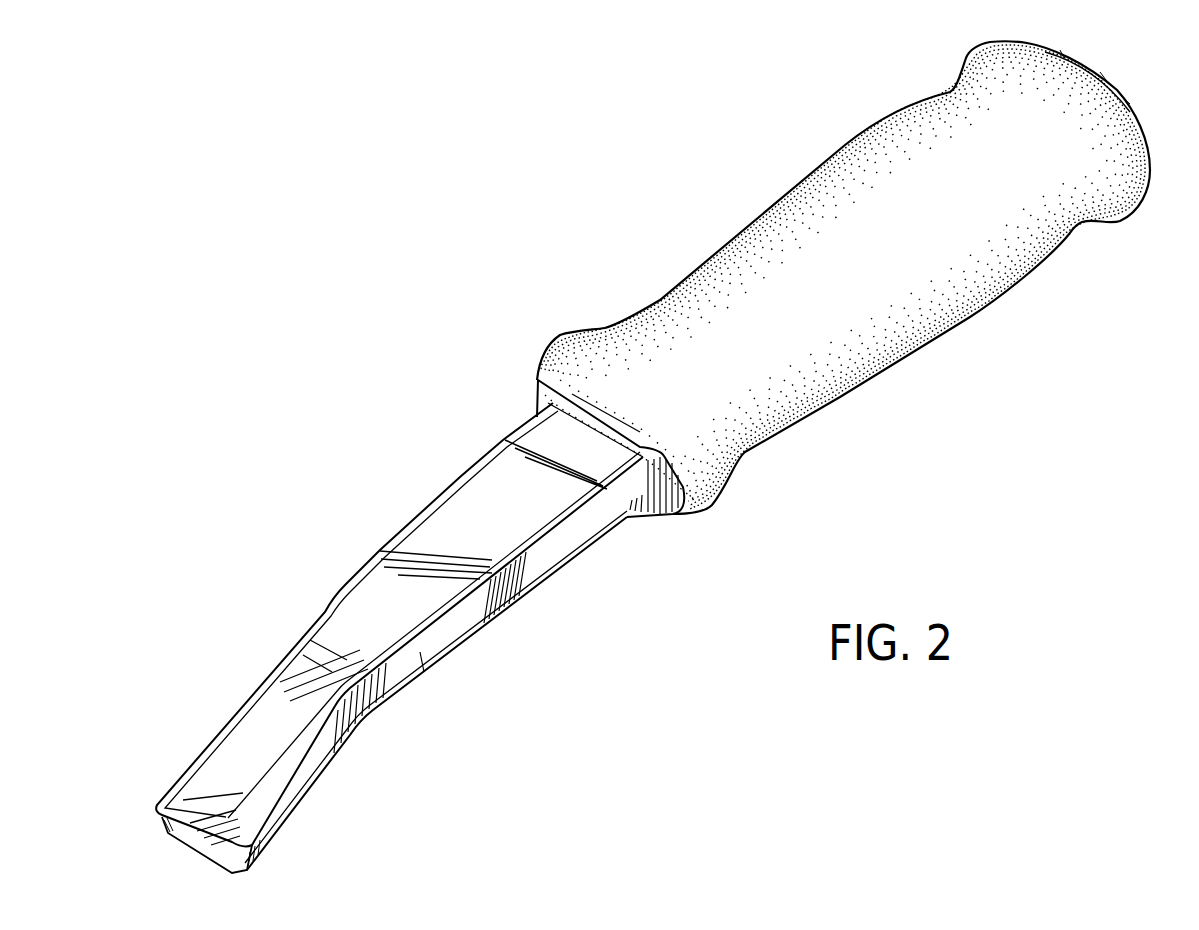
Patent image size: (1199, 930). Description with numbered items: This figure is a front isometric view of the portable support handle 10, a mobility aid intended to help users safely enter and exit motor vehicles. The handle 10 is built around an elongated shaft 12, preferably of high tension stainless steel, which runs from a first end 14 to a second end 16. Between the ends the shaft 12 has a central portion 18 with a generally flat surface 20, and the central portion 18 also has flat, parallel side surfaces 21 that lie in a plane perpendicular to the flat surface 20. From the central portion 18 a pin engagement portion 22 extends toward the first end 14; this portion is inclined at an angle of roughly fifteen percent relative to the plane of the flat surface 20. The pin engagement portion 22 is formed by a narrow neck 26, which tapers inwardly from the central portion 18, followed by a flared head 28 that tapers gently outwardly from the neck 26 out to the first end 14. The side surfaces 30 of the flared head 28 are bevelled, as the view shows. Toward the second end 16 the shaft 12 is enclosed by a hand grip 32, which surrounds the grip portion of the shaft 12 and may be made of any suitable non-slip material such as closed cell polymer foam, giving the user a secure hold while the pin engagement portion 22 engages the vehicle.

The portable support handle 10 is at (525, 285).
The elongated shaft 12 is at (364, 624).
The first end 14 is at (163, 829).
The second end 16 is at (1113, 82).
The central portion 18 is at (557, 598).
The flat surface 20 is at (453, 533).
The side surfaces 21 is at (457, 640).
The pin engagement portion 22 is at (200, 690).
The narrow neck 26 is at (372, 731).
The flared head 28 is at (283, 842).
The side surfaces of flared head 30 is at (277, 800).
The hand grip 32 is at (923, 347).